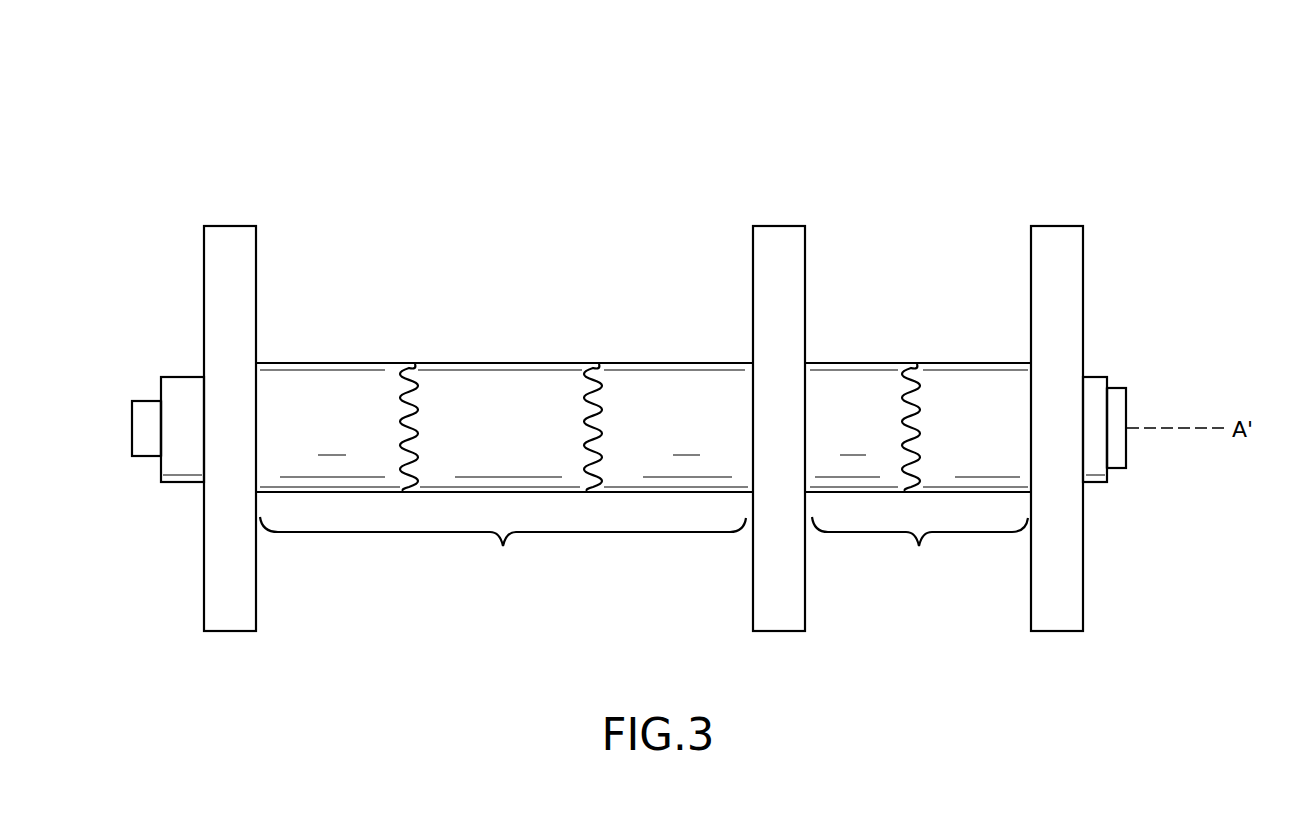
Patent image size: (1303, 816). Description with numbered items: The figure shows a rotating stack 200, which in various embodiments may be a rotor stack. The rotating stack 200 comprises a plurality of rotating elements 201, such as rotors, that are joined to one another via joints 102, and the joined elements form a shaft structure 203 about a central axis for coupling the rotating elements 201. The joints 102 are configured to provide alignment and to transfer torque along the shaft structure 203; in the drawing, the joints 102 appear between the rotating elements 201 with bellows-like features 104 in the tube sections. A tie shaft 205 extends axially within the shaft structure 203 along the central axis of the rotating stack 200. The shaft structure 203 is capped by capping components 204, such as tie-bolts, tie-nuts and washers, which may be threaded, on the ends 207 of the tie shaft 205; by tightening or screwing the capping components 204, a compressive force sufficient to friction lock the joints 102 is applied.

The rotating stack 200 is at (1193, 123).
The joint 102 is at (337, 395).
The bellows 104 is at (409, 363).
The rotating element 201 is at (239, 226).
The shaft structure 203 is at (644, 549).
The capping component 204 is at (131, 448).
The tie shaft 205 is at (183, 382).
The end of the tie shaft 207 is at (160, 388).